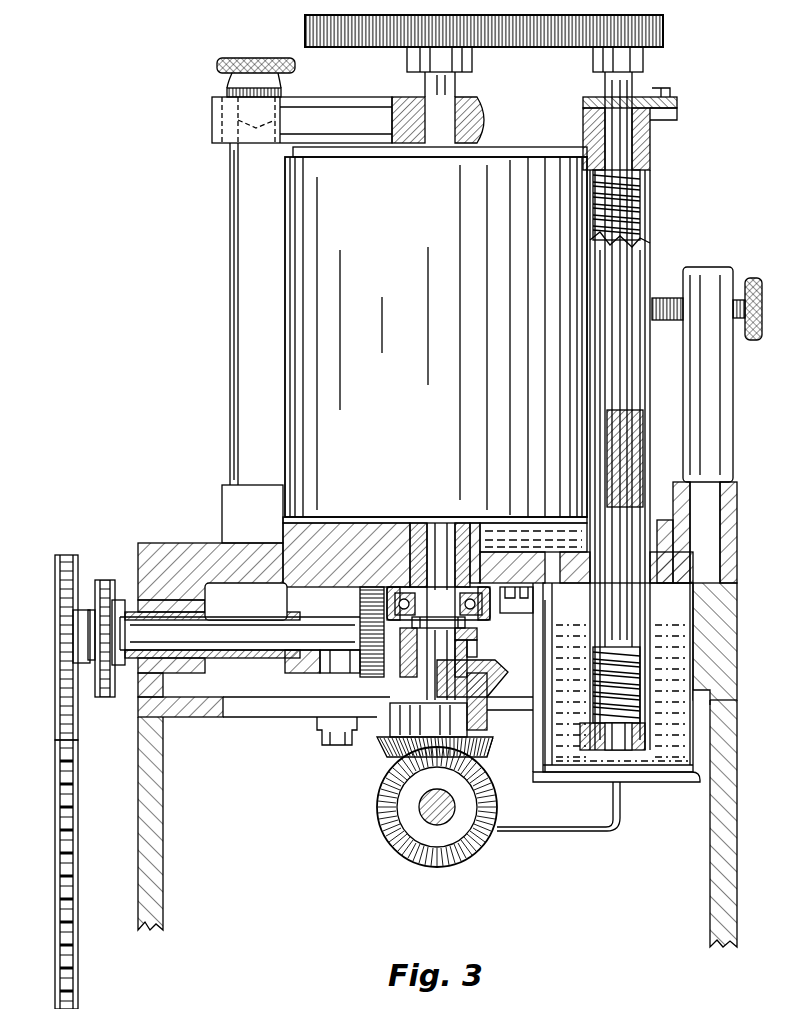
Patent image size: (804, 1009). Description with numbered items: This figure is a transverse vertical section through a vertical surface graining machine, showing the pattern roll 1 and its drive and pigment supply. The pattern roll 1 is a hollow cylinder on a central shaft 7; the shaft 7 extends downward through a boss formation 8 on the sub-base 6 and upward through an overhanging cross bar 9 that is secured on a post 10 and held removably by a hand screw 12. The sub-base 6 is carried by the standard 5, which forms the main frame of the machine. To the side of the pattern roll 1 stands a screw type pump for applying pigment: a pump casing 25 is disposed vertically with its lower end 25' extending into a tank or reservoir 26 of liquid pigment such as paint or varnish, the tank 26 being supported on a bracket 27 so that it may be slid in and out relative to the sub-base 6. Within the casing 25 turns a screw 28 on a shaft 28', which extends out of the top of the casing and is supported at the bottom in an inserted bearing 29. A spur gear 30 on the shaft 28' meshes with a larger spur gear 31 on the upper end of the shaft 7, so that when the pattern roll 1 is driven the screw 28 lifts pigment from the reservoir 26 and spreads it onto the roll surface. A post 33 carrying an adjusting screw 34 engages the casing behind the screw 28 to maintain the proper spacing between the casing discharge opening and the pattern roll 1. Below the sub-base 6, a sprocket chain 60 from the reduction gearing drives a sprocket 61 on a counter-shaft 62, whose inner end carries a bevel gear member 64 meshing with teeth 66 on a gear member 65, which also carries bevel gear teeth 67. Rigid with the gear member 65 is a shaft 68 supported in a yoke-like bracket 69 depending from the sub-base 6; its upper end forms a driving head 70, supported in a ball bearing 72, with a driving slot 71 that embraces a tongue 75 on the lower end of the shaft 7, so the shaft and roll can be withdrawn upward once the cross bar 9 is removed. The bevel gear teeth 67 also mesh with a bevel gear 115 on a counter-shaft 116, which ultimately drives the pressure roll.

The pattern roll 1 is at (435, 335).
The standard 5 is at (157, 874).
The sub-base 6 is at (190, 552).
The central shaft 7 is at (431, 540).
The boss formation 8 is at (413, 595).
The overhanging cross bar 9 is at (470, 115).
The post 10 is at (230, 206).
The hand screw 12 is at (217, 68).
The pump casing 25 is at (636, 344).
The lower end of pump casing 25' is at (636, 675).
The tank or reservoir 26 is at (700, 752).
The bracket 27 is at (649, 783).
The screw 28 is at (625, 446).
The shaft 28' is at (648, 358).
The inserted bearing 29 is at (593, 750).
The spur gear 30 is at (663, 39).
The spur gear 31 is at (511, 38).
The post 33 is at (728, 390).
The adjusting screw 34 is at (757, 290).
The sprocket chain 60 is at (63, 812).
The sprocket 61 is at (63, 610).
The counter-shaft 62 is at (253, 630).
The bevel gear member 64 is at (345, 674).
The gear member 65 is at (488, 711).
The gear teeth 66 is at (495, 678).
The bevel gear teeth 67 is at (492, 747).
The shaft 68 is at (478, 634).
The yoke-like bracket 69 is at (478, 655).
The driving head 70 is at (473, 549).
The driving slot 71 is at (410, 590).
The ball bearing 72 is at (484, 606).
The tongue 75 is at (438, 624).
The bevel gear 115 is at (487, 803).
The counter-shaft 116 is at (447, 813).